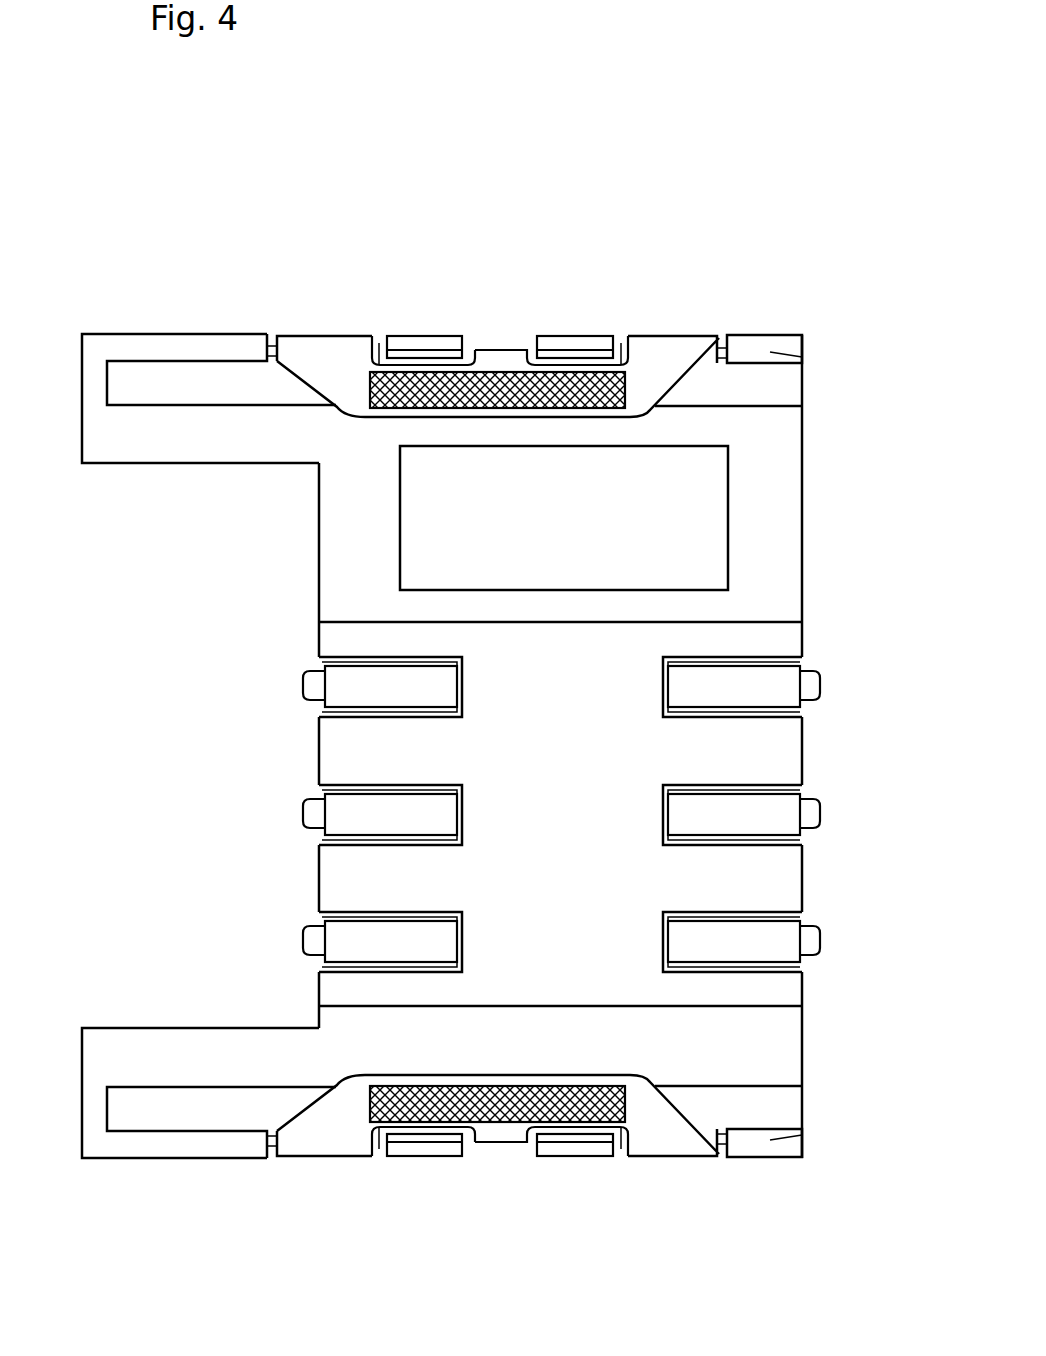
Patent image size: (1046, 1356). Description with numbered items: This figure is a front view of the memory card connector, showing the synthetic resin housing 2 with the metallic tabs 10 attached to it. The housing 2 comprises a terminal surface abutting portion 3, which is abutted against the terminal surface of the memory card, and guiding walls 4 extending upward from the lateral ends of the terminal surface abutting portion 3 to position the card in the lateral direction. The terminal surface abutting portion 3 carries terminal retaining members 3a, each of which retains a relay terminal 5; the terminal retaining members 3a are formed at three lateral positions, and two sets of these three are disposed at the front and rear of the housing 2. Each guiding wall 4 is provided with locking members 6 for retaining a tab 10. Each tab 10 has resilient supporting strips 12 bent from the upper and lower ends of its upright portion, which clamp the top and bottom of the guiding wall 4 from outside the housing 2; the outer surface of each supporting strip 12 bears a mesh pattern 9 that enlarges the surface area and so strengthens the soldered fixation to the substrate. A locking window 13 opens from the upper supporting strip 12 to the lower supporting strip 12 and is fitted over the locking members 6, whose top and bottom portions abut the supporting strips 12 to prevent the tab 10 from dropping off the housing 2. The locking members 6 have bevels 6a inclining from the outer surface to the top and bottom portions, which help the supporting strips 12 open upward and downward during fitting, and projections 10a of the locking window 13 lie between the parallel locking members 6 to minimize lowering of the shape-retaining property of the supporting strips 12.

The housing 2 is at (150, 590).
The terminal surface abutting portion 3 is at (510, 768).
The terminal retaining member 3a is at (383, 660).
The guiding wall 4 is at (178, 327).
The relay terminal 5 is at (333, 938).
The locking member 6 is at (430, 327).
The bevel 6a is at (412, 334).
The mesh pattern 9 is at (625, 381).
The tab 10 is at (660, 327).
The projection 10a is at (513, 356).
The supporting strip 12 is at (677, 353).
The locking window 13 is at (387, 358).